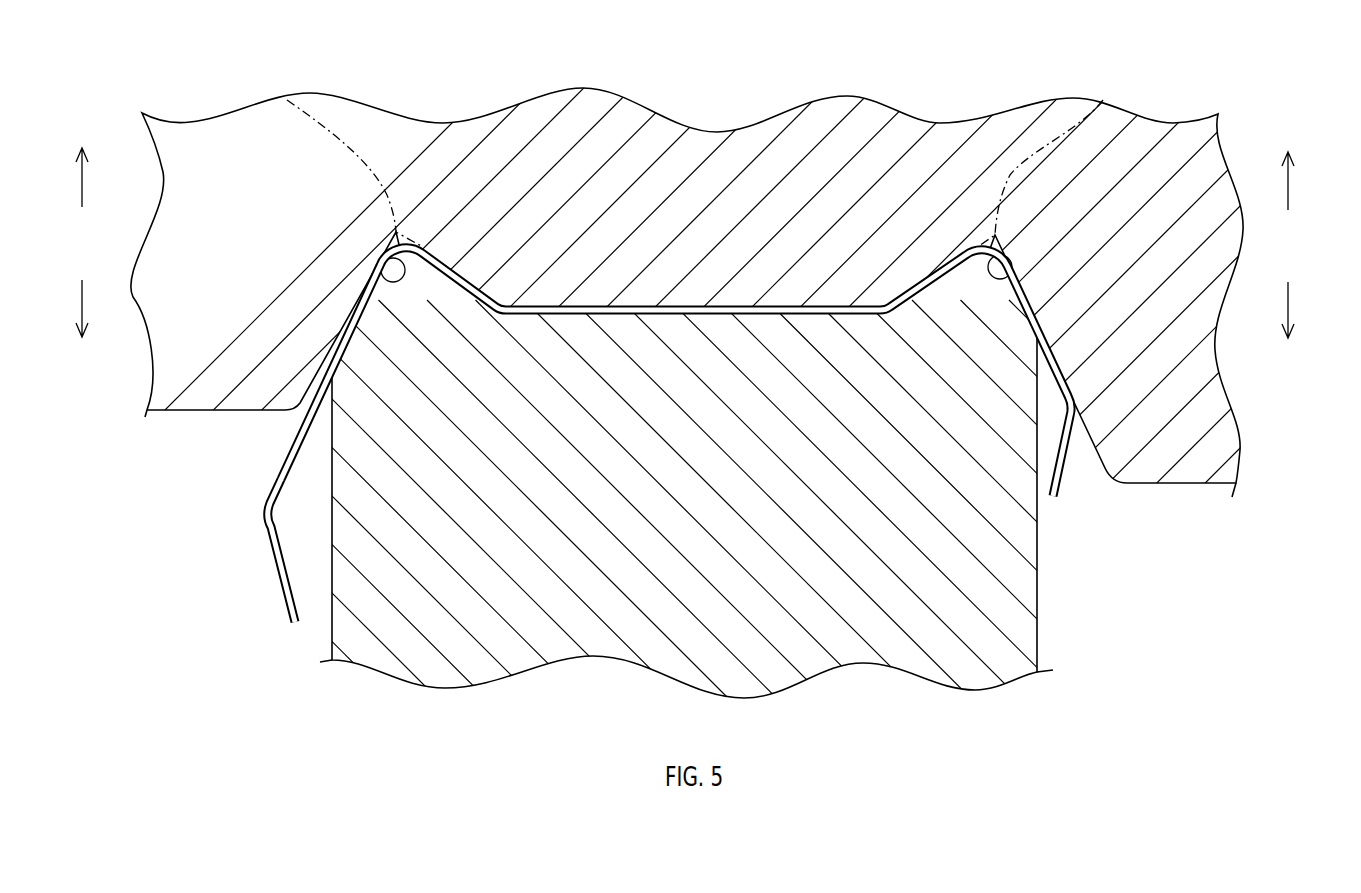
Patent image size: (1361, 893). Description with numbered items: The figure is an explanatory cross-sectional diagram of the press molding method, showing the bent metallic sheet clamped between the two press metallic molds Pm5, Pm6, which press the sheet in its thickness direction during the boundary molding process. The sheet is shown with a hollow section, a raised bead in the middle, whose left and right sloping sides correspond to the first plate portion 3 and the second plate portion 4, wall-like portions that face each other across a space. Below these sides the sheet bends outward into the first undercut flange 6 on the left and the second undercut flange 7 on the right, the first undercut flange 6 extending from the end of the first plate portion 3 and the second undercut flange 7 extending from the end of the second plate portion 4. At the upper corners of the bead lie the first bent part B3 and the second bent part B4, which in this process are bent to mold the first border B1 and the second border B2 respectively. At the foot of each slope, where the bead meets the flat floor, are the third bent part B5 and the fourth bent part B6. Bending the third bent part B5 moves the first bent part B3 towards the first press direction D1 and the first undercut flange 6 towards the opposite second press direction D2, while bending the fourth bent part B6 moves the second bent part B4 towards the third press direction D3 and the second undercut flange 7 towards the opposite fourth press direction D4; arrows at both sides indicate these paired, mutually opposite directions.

The first plate portion 3 is at (285, 453).
The second plate portion 4 is at (1060, 347).
The first undercut flange 6 is at (278, 578).
The second undercut flange 7 is at (1065, 472).
The first border B1 is at (380, 280).
The second border B2 is at (1022, 260).
The first bent part B3 is at (287, 100).
The second bent part B4 is at (1103, 100).
The third bent part B5 is at (512, 303).
The fourth bent part B6 is at (882, 307).
The first press direction D1 is at (98, 177).
The second press direction D2 is at (98, 308).
The third press direction D3 is at (1305, 181).
The fourth press direction D4 is at (1305, 310).
The press metallic mold Pm5 is at (680, 500).
The press metallic mold Pm6 is at (718, 290).